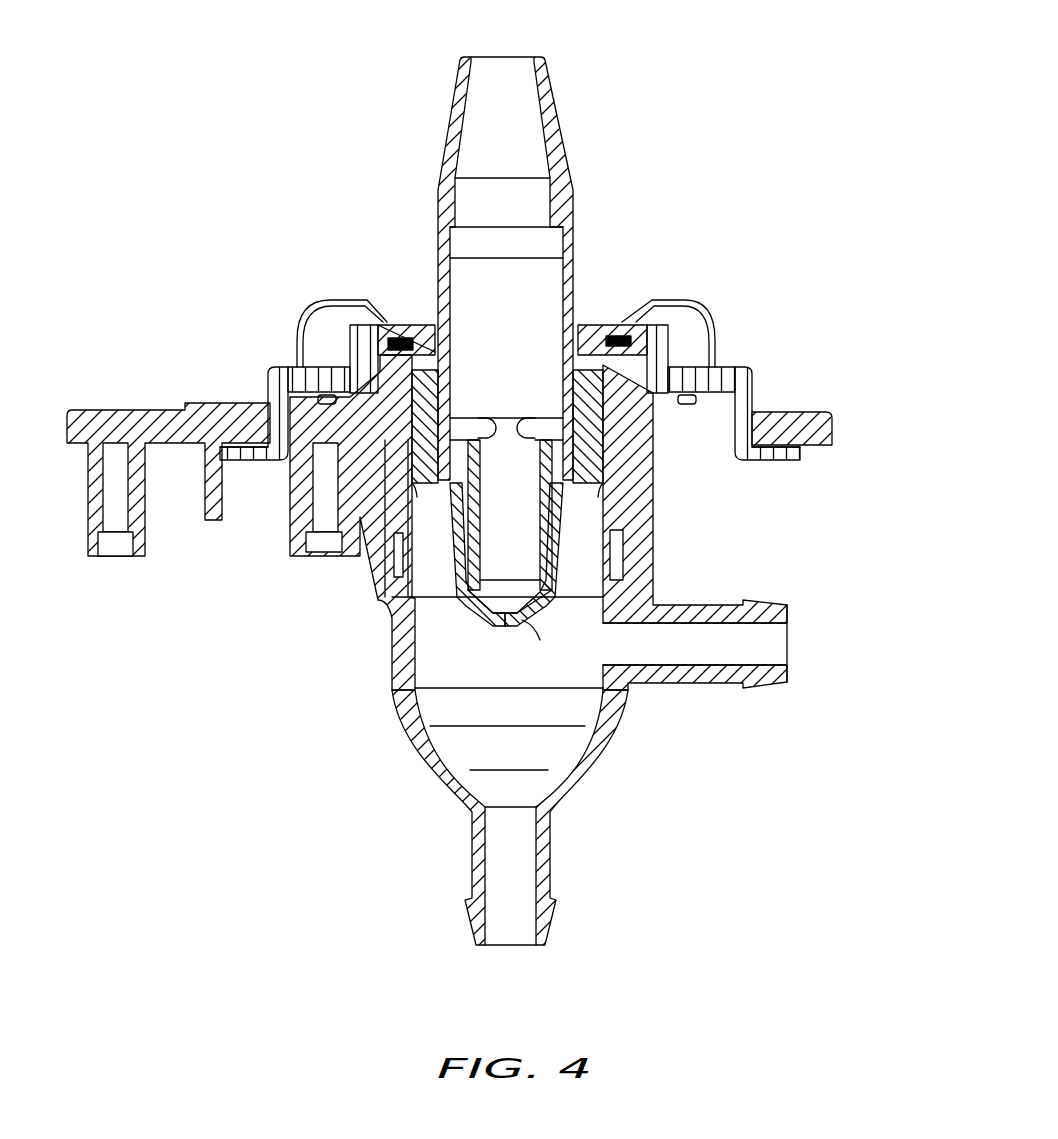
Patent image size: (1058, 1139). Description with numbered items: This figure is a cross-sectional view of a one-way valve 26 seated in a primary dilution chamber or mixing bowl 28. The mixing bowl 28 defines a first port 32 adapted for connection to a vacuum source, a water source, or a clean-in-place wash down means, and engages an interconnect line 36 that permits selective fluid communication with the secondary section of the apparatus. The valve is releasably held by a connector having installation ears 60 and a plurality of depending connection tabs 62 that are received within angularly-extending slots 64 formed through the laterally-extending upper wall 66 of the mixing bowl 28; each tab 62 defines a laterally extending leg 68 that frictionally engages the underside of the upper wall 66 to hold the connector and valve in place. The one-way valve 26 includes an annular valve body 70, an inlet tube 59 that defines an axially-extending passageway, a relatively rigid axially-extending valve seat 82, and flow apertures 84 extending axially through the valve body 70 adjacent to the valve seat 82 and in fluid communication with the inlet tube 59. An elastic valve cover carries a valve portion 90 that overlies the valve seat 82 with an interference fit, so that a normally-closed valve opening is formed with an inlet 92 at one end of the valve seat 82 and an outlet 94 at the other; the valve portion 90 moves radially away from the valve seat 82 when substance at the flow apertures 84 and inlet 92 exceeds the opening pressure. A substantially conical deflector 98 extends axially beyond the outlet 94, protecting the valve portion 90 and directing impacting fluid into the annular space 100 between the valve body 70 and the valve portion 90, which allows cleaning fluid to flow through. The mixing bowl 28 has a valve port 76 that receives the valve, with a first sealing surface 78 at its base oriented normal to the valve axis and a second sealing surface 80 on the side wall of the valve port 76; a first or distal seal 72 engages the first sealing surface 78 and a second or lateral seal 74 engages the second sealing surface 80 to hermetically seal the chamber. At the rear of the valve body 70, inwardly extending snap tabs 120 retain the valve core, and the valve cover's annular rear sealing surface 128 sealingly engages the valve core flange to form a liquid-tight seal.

The one-way valve 26 is at (704, 217).
The primary dilution chamber or mixing bowl 28 is at (393, 720).
The first port 32 is at (694, 683).
The interconnect line 36 is at (550, 862).
The inlet tube 59 is at (575, 220).
The installation ears 60 is at (343, 297).
The depending connection tabs 62 is at (278, 385).
The angularly-extending slots 64 is at (260, 398).
The laterally-extending upper wall 66 is at (97, 410).
The laterally extending leg 68 is at (260, 460).
The annular valve body 70 is at (392, 392).
The first or distal seal 72 is at (578, 600).
The second or lateral seal 74 is at (640, 572).
The valve port 76 is at (640, 502).
The first sealing surface 78 is at (385, 625).
The second sealing surface 80 is at (400, 575).
The valve seat 82 is at (478, 530).
The flow apertures 84 is at (483, 425).
The valve portion 90 is at (622, 542).
The inlet 92 is at (452, 440).
The outlet 94 is at (462, 600).
The deflector 98 is at (505, 628).
The annular space 100 is at (412, 545).
The snap tabs 120 is at (405, 330).
The annular rear sealing surface 128 is at (433, 340).